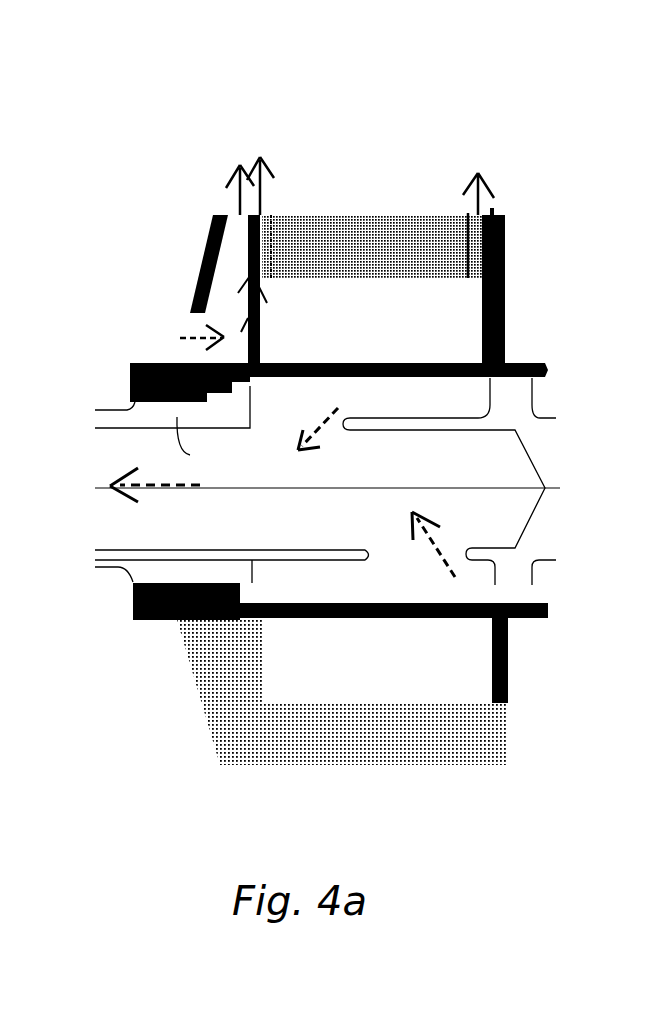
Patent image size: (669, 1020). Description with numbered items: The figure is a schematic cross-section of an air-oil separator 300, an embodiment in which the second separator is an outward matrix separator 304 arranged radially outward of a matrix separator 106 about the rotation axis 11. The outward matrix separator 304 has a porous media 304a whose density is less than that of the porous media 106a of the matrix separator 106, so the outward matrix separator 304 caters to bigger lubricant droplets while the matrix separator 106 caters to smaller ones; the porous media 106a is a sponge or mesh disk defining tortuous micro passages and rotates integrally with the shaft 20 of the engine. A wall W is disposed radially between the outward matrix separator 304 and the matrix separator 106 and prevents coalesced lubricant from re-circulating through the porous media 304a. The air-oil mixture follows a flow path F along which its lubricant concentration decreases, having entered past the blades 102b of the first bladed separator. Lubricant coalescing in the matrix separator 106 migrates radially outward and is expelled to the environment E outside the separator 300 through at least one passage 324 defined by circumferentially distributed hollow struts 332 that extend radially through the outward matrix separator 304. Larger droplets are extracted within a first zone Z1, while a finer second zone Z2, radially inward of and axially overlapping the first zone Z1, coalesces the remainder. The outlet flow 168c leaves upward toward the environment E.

The air-oil separator 300 is at (601, 82).
The outward matrix separator 304 is at (413, 240).
The porous media of the outward matrix separator 304a is at (380, 253).
The hollow struts 332 is at (288, 233).
The passage 324 is at (487, 250).
The outlet flow 168c is at (272, 213).
The matrix separator 106 is at (370, 433).
The porous media 106a is at (392, 326).
The shaft 20 is at (202, 441).
The rotation axis 11 is at (267, 492).
The flow path F is at (178, 342).
The environment E is at (625, 190).
The blades 102b is at (230, 667).
The wall W is at (437, 708).
The first zone Z1 is at (540, 705).
The second zone Z2 is at (540, 628).